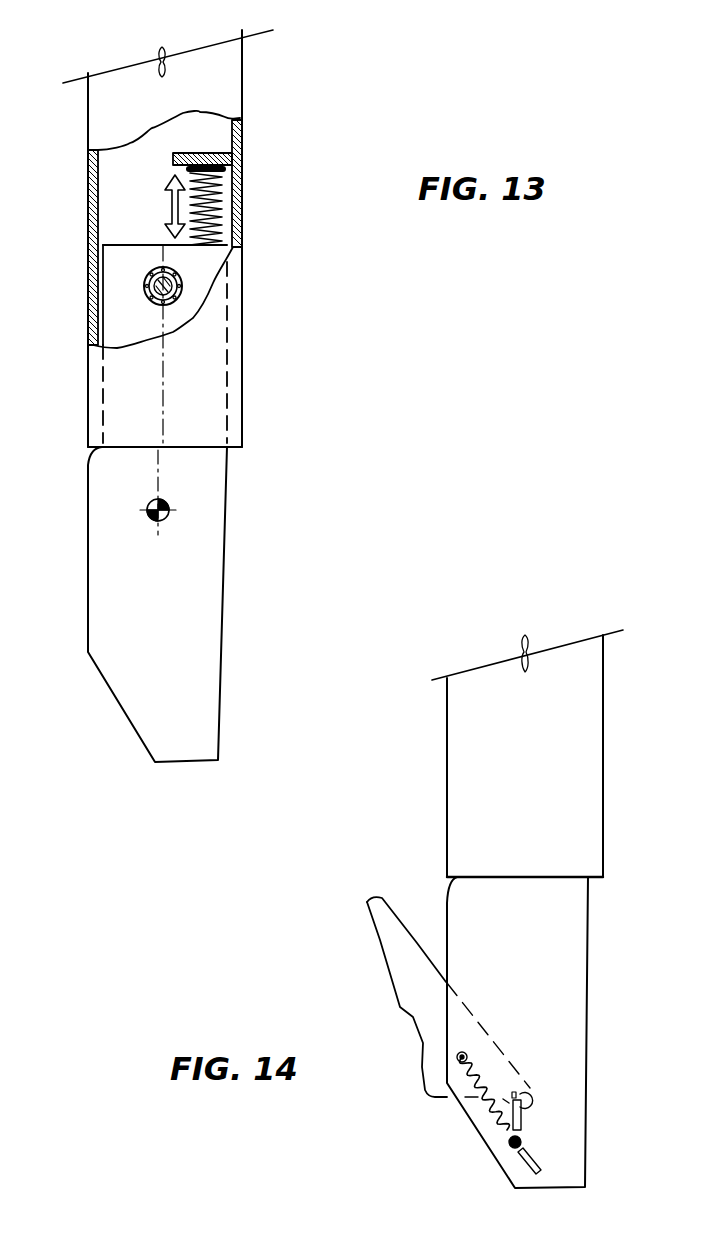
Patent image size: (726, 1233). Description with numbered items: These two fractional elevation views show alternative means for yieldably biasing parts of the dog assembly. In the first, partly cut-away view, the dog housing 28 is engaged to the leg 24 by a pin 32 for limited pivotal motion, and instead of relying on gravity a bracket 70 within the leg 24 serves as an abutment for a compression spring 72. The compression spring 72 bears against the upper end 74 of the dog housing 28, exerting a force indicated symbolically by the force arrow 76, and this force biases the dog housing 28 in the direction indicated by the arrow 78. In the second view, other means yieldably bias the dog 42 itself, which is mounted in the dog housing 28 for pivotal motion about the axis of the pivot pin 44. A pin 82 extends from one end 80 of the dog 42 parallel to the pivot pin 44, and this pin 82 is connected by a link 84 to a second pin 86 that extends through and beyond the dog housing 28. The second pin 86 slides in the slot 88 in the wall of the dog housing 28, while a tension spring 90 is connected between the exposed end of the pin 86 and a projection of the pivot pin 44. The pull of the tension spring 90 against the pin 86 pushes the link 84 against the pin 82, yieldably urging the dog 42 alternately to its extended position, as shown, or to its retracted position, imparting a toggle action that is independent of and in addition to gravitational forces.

In FIG. 13, the leg 24 is at (218, 73).
In FIG. 13, the dog housing 28 is at (210, 508).
In FIG. 14, the dog housing 28 is at (582, 810).
In FIG. 13, the pin 32 is at (145, 282).
In FIG. 14, the dog 42 is at (393, 950).
In FIG. 14, the pivot pin 44 is at (458, 1056).
In FIG. 13, the bracket 70 is at (210, 147).
In FIG. 13, the compression spring 72 is at (225, 197).
In FIG. 13, the upper end of the dog housing 74 is at (210, 267).
In FIG. 13, the force arrow 76 is at (172, 198).
In FIG. 13, the arrow 78 is at (158, 784).
In FIG. 14, the end of the dog 80 is at (497, 1062).
In FIG. 14, the pin 82 is at (520, 1098).
In FIG. 14, the link 84 is at (522, 1120).
In FIG. 14, the second pin 86 is at (522, 1137).
In FIG. 14, the slot 88 is at (522, 1157).
In FIG. 14, the tension spring 90 is at (497, 1113).